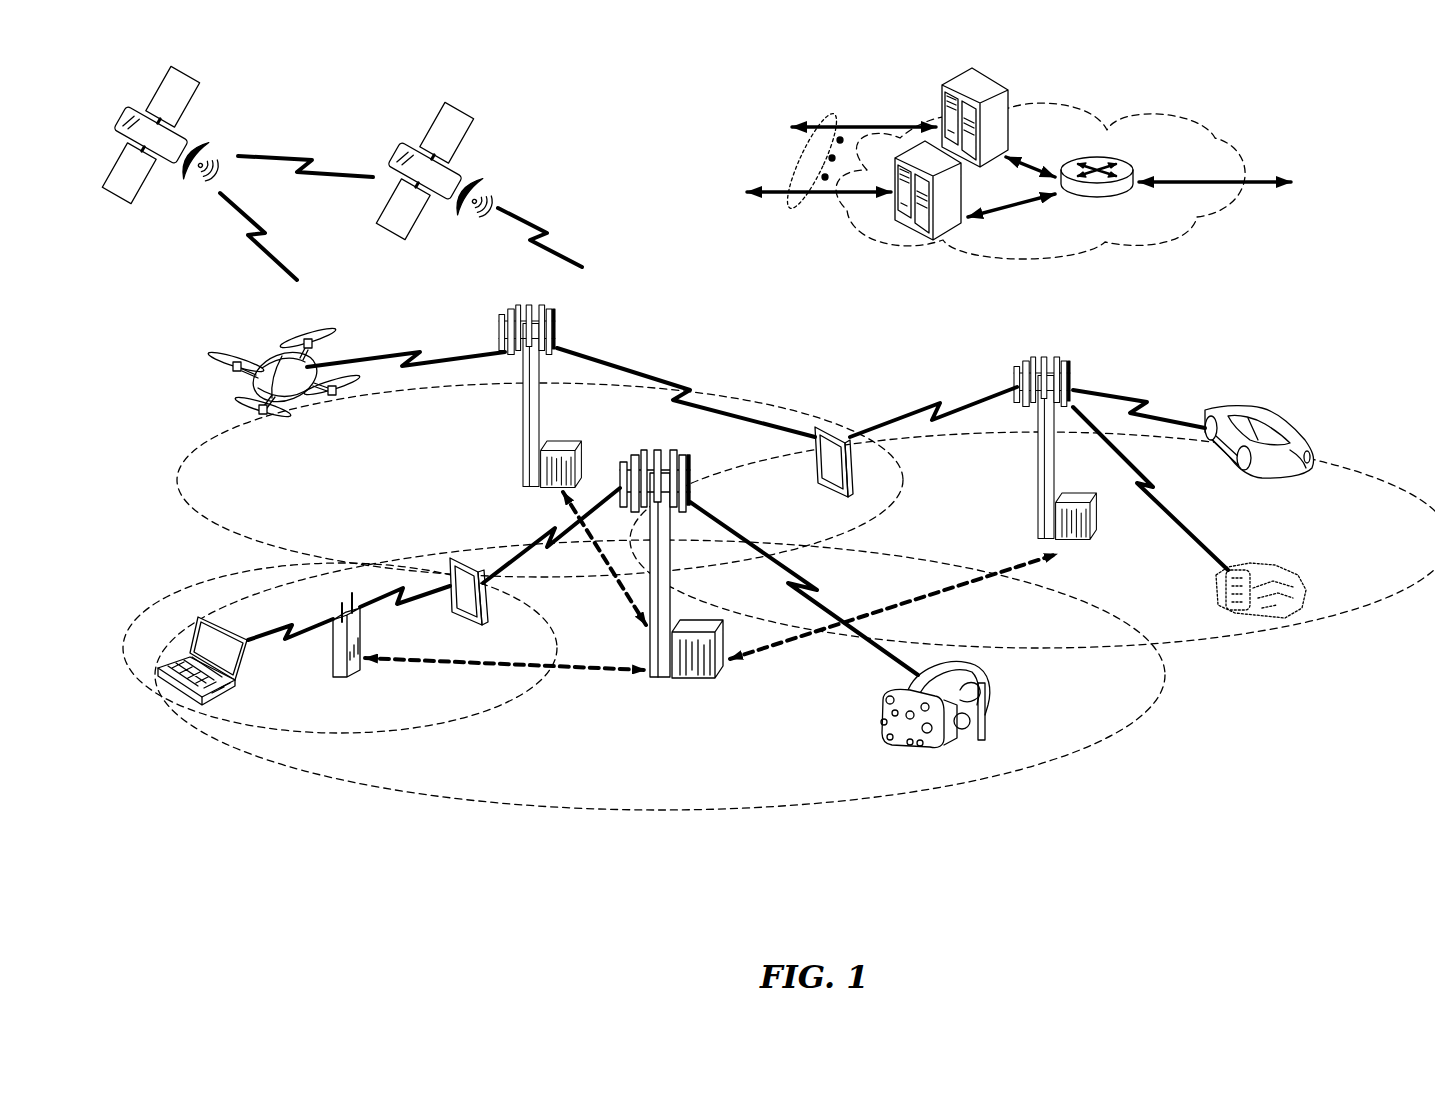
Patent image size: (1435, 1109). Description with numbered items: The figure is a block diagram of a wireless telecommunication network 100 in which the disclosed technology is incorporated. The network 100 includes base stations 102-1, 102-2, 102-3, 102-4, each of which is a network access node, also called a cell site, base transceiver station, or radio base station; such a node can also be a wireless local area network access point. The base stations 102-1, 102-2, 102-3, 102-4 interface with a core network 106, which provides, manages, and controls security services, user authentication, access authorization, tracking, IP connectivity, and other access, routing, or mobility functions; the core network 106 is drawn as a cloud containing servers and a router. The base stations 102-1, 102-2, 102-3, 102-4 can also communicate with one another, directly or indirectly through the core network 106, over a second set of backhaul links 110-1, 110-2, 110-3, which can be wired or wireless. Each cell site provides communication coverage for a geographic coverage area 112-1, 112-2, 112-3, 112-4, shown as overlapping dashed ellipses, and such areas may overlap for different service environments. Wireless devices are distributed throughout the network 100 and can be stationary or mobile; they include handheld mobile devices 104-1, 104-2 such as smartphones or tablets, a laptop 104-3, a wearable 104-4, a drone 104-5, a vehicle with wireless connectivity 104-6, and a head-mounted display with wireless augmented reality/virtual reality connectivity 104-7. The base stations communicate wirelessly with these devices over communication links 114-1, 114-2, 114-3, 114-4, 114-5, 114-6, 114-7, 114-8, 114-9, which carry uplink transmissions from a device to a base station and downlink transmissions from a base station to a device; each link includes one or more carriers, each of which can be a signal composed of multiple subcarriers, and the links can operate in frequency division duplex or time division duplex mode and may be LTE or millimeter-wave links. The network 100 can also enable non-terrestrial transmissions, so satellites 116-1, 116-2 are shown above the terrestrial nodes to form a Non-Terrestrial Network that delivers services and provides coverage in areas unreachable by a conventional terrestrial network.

The wireless telecommunication network 100 is at (1365, 140).
The base station 102-1 is at (658, 678).
The base station 102-2 is at (523, 433).
The base station 102-3 is at (1038, 465).
The base station 102-4 is at (333, 665).
The handheld mobile device 104-1 is at (482, 600).
The handheld mobile device 104-2 is at (815, 468).
The laptop 104-3 is at (178, 700).
The wearable 104-4 is at (1238, 570).
The drone 104-5 is at (297, 400).
The vehicle with wireless connectivity 104-6 is at (1272, 422).
The head-mounted display 104-7 is at (988, 694).
The core network 106 is at (1128, 243).
The backhaul link 110-1 is at (408, 662).
The backhaul link 110-2 is at (960, 590).
The backhaul link 110-3 is at (622, 587).
The geographic coverage area 112-1 is at (585, 808).
The geographic coverage area 112-2 is at (467, 718).
The geographic coverage area 112-3 is at (243, 540).
The geographic coverage area 112-4 is at (1335, 465).
The communication link 114-1 is at (822, 588).
The communication link 114-2 is at (548, 540).
The communication link 114-3 is at (265, 642).
The communication link 114-4 is at (412, 605).
The communication link 114-5 is at (408, 356).
The communication link 114-6 is at (695, 385).
The communication link 114-7 is at (925, 405).
The communication link 114-8 is at (1155, 488).
The communication link 114-9 is at (1137, 404).
The satellite 116-1 is at (207, 148).
The satellite 116-2 is at (482, 188).